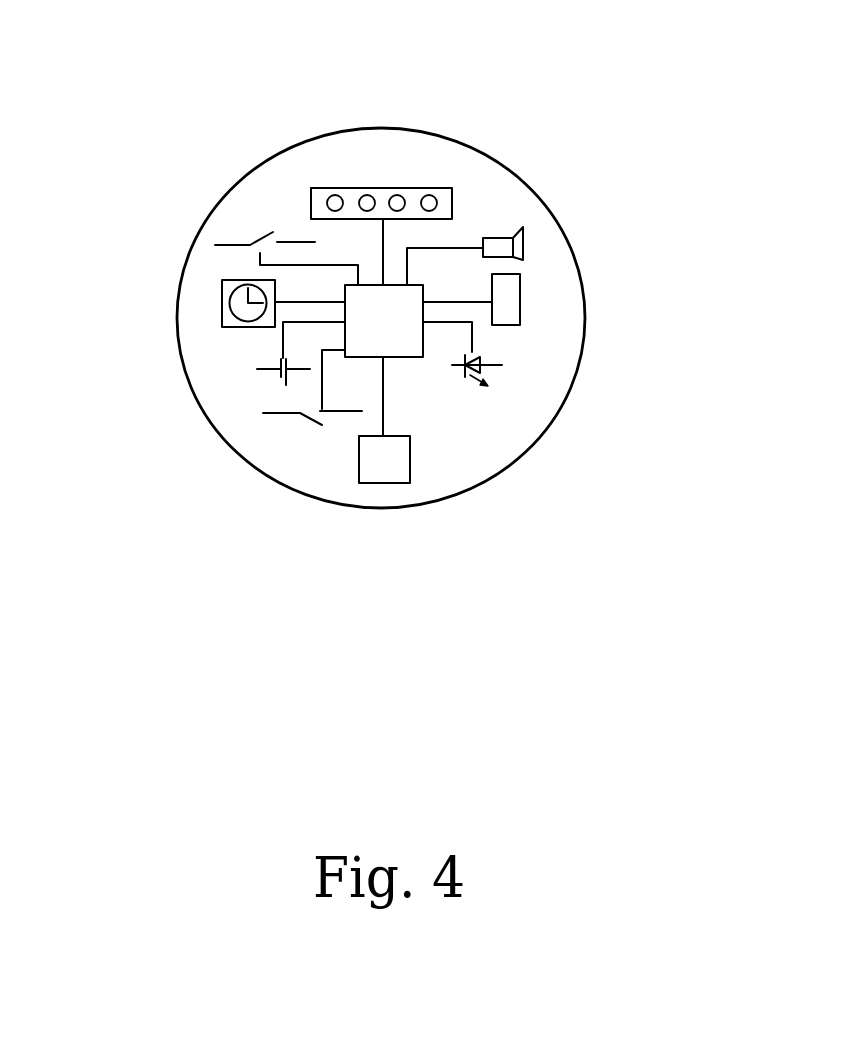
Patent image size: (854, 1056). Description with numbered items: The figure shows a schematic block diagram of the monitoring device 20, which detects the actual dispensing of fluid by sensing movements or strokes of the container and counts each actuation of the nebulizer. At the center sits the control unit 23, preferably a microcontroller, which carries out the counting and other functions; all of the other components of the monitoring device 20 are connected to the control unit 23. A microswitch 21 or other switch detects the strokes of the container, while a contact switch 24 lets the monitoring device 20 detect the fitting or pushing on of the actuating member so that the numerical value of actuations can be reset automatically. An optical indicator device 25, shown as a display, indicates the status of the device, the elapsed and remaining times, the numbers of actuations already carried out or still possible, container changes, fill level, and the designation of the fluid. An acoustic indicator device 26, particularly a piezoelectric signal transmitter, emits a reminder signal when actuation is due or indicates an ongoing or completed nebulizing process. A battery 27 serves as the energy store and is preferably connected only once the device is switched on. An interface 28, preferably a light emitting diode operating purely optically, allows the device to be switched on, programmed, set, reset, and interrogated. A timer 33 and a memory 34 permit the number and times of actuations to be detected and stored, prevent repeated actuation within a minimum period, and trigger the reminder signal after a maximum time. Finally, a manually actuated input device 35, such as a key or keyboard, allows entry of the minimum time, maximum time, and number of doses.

The monitoring device 20 is at (243, 161).
The microswitch 21 is at (273, 232).
The control unit 23 is at (377, 303).
The contact switch 24 is at (310, 418).
The optical indicator device 25 is at (520, 303).
The acoustic indicator device 26 is at (503, 247).
The battery 27 is at (282, 376).
The interface 28 is at (493, 365).
The timer 33 is at (231, 310).
The memory 34 is at (388, 456).
The input device 35 is at (378, 197).